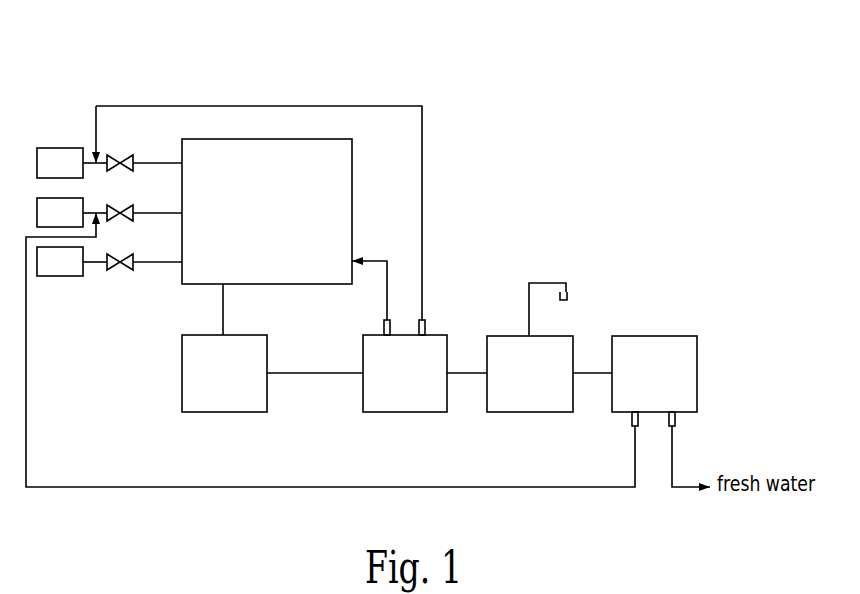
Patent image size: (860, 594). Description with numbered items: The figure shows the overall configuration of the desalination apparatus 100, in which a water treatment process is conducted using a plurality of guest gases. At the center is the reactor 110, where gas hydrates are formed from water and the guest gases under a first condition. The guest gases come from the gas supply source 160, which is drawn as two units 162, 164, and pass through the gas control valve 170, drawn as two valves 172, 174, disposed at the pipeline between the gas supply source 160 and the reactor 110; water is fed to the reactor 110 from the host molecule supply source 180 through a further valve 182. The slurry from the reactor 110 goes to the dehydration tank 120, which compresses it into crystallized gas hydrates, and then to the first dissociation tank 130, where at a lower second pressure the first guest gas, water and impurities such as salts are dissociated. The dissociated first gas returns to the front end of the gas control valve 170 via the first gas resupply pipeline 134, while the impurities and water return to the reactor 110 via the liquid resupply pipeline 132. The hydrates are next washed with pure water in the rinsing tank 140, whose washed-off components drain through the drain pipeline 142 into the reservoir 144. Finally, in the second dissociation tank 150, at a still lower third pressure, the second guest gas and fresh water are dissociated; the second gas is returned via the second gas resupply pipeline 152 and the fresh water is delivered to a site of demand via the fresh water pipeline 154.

The desalination apparatus 100 is at (633, 40).
The reactor 110 is at (212, 139).
The dehydration tank 120 is at (197, 412).
The first dissociation tank 130 is at (377, 412).
The liquid resupply pipeline 132 is at (371, 260).
The first gas resupply pipeline 134 is at (422, 183).
The rinsing tank 140 is at (500, 412).
The drain pipeline 142 is at (544, 283).
The reservoir 144 is at (570, 296).
The second dissociation tank 150 is at (620, 412).
The second gas resupply pipeline 152 is at (86, 486).
The fresh water pipeline 154 is at (675, 450).
The gas supply source 160 is at (70, 56).
The first supply source 162 is at (70, 148).
The second supply source 164 is at (37, 209).
The gas control valve 170 is at (162, 56).
The first valve 172 is at (113, 155).
The second valve 174 is at (125, 205).
The host molecule supply source 180 is at (57, 276).
The third valve 182 is at (115, 271).